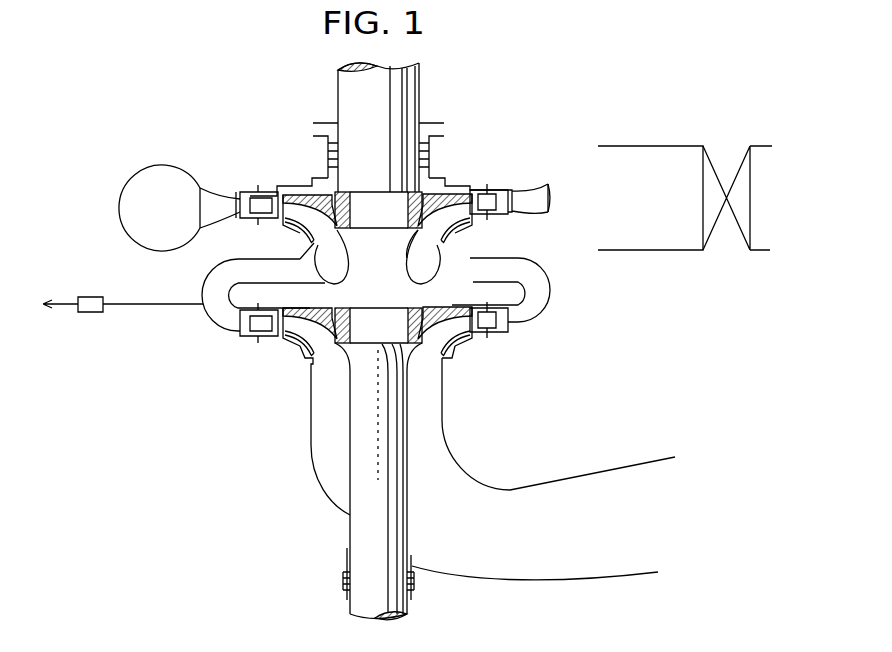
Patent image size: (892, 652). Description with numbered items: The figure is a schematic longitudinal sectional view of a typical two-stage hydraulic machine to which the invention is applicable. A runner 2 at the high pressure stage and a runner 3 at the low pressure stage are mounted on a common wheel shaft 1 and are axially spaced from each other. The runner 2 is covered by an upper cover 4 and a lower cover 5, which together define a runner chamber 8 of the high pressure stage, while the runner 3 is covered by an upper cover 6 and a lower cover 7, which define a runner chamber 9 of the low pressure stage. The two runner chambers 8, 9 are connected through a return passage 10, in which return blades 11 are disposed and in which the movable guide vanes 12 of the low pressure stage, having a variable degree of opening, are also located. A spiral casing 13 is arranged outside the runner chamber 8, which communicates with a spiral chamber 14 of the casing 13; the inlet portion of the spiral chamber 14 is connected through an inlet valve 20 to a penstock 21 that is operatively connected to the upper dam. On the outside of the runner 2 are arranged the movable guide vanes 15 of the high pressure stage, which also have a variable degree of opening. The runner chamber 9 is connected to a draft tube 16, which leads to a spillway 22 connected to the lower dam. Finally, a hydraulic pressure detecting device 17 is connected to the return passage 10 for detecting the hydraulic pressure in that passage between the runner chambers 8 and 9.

The wheel shaft 1 is at (419, 89).
The runner 2 is at (430, 222).
The runner 3 is at (415, 352).
The upper cover 4 is at (292, 178).
The lower cover 5 is at (282, 236).
The upper cover 6 is at (311, 250).
The lower cover 7 is at (288, 347).
The runner chamber 8 is at (462, 228).
The runner chamber 9 is at (458, 346).
The return passage 10 is at (548, 302).
The return blades 11 is at (548, 275).
The movable guide vanes 12 is at (493, 324).
The spiral casing 13 is at (608, 150).
The spiral chamber 14 is at (612, 150).
The movable guide vanes 15 is at (496, 208).
The draft tube 16 is at (485, 478).
The hydraulic pressure detecting device 17 is at (92, 296).
The inlet valve 20 is at (708, 238).
The penstock 21 is at (762, 246).
The spillway 22 is at (535, 577).